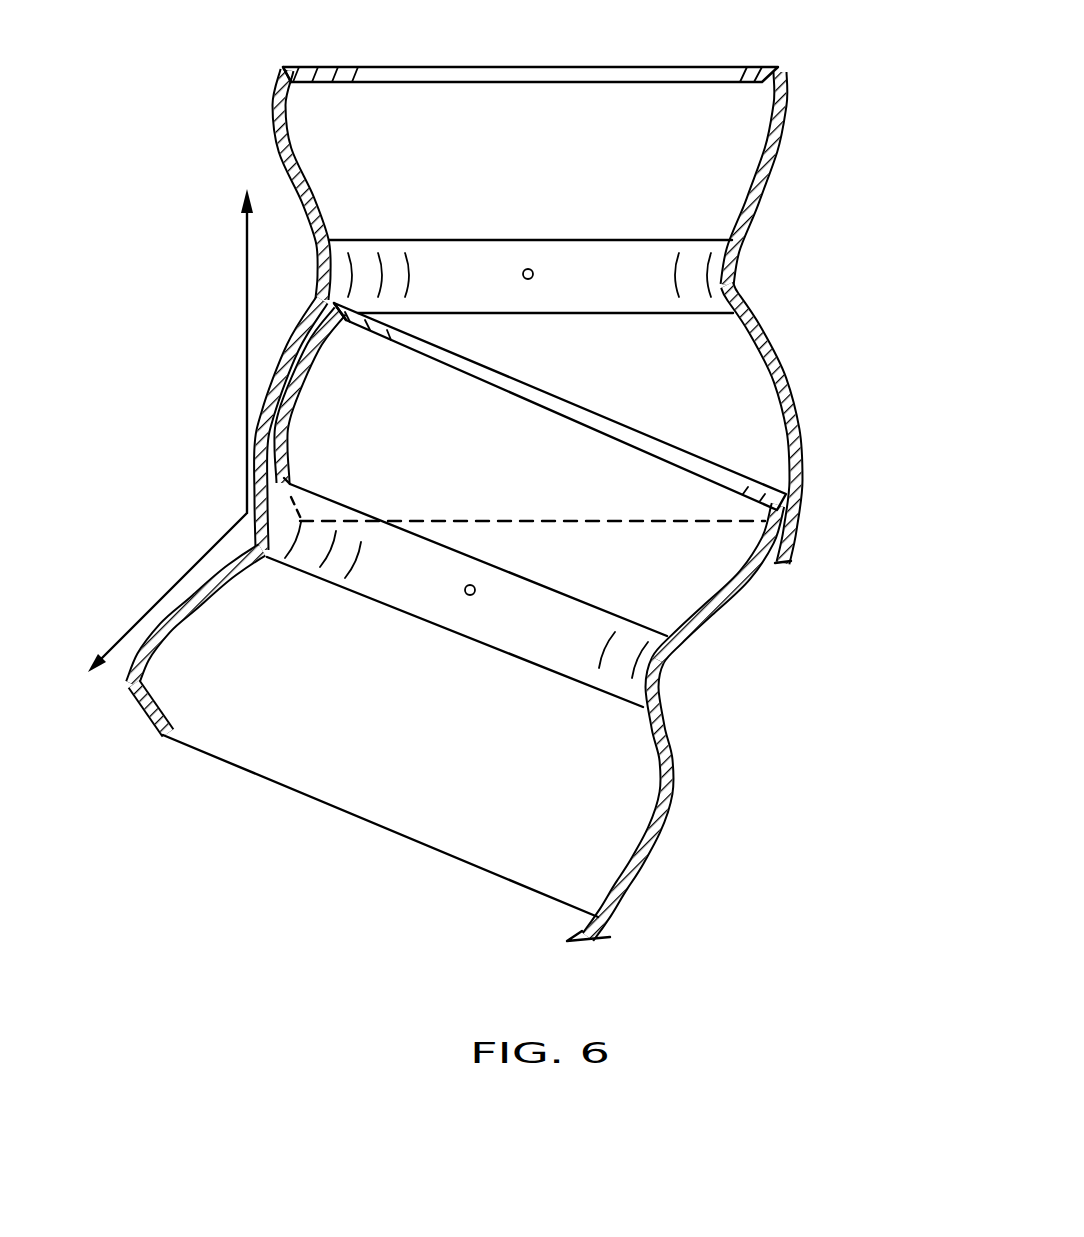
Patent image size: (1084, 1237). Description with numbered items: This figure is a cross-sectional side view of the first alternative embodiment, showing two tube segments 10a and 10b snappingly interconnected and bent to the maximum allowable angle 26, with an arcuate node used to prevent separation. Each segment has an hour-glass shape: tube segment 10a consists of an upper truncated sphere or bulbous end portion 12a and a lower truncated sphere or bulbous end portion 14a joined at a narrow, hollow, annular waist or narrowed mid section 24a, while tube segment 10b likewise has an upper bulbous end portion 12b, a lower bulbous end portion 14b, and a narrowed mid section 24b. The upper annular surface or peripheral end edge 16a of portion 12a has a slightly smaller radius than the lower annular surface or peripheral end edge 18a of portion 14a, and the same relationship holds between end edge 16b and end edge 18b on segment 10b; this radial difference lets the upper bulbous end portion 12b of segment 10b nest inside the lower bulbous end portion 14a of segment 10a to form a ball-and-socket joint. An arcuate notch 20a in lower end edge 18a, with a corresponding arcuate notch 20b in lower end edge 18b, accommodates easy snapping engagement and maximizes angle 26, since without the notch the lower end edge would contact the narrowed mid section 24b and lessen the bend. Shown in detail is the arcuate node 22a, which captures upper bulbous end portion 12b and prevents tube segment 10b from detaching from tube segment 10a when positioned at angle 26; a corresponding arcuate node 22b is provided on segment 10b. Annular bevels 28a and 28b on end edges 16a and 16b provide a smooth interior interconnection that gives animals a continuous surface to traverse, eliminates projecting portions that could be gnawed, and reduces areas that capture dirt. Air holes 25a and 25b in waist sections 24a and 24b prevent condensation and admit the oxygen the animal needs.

The tube segment 10a is at (620, 281).
The tube segment 10b is at (500, 605).
The upper truncated sphere or bulbous end portion 12a is at (783, 140).
The upper truncated sphere or bulbous end portion 12b is at (753, 587).
The lower truncated sphere or bulbous end portion 14a is at (797, 447).
The lower truncated sphere or bulbous end portion 14b is at (663, 827).
The upper annular surface or peripheral end edge 16a is at (562, 65).
The upper annular surface or peripheral end edge 16b is at (498, 372).
The lower annular surface or peripheral end edge 18a is at (688, 520).
The lower annular surface or peripheral end edge 18b is at (377, 823).
The arcuate notch 20a is at (290, 480).
The arcuate notch 20b is at (157, 717).
The arcuate node 22a is at (797, 547).
The arcuate node 22b is at (607, 937).
The annular intersection or narrowed mid section 24a is at (740, 282).
The annular intersection or narrowed mid section 24b is at (663, 670).
The air hole 25a is at (532, 267).
The air hole 25b is at (468, 596).
The maximum allowable angle 26 is at (247, 308).
The annular bevel 28a is at (288, 68).
The annular bevel 28b is at (352, 303).